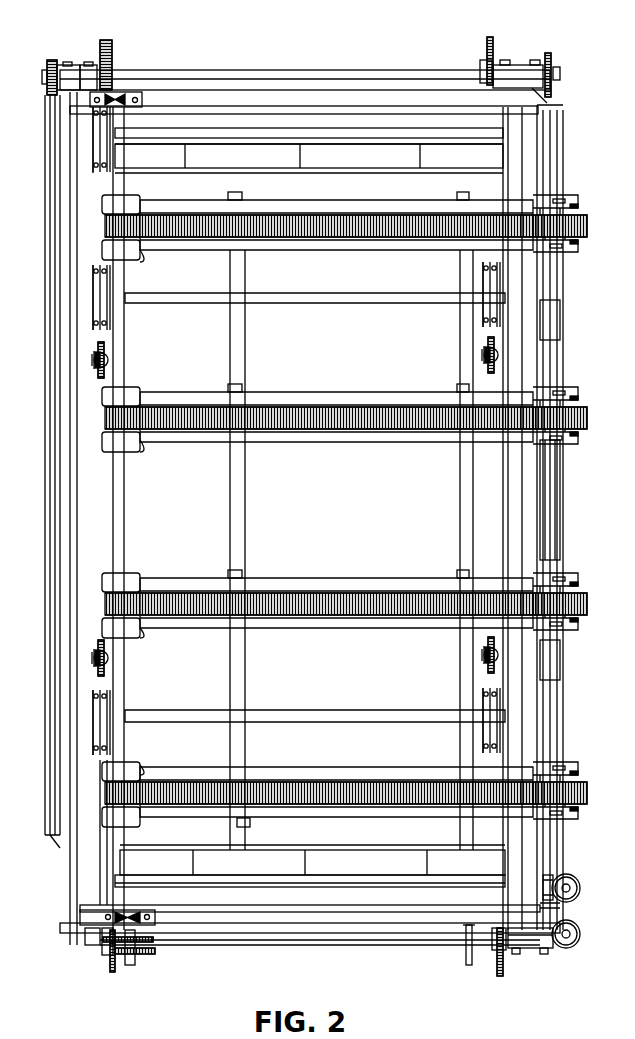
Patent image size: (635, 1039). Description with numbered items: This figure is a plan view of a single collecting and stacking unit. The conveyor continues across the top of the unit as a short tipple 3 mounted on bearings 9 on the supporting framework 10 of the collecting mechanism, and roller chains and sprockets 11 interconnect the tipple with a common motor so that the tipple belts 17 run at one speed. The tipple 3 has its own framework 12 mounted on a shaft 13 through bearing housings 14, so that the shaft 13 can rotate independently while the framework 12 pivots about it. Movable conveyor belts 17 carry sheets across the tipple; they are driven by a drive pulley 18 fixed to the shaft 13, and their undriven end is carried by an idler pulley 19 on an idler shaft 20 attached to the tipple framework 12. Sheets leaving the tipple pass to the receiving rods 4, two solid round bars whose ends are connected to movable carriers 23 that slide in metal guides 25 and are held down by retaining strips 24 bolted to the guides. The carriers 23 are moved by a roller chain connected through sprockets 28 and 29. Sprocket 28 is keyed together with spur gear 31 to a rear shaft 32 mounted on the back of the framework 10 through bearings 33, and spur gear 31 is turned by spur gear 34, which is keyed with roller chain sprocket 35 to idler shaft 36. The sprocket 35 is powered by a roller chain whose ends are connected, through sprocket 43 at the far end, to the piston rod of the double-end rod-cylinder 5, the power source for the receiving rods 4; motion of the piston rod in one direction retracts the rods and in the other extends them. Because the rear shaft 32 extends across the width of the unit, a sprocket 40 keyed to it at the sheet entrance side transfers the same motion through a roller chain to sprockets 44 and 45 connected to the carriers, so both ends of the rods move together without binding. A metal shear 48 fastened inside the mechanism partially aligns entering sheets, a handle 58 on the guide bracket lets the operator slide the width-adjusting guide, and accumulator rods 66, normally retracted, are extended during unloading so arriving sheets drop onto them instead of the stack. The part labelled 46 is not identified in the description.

The tipple 3 is at (333, 573).
The receiving rods 4 is at (355, 130).
The double-end rod-cylinder 5 is at (565, 515).
The bearings 9 is at (120, 107).
The framework 10 is at (265, 100).
The roller chains and sprockets 11 is at (150, 955).
The framework 12 is at (248, 207).
The shaft 13 is at (128, 515).
The bearing housings 14 is at (130, 197).
The conveyor belts 17 is at (405, 220).
The drive pulley 18 is at (140, 255).
The idler pulley 19 is at (575, 237).
The idler shaft 20 is at (575, 207).
The carriers 23 is at (125, 157).
The retaining strips 24 is at (100, 283).
The guides 25 is at (105, 312).
The sprocket 28 is at (493, 40).
The sprocket 29 is at (497, 350).
The spur gear 31 is at (580, 922).
The rear shaft 32 is at (320, 950).
The bearings 33 is at (548, 950).
The spur gear 34 is at (580, 882).
The roller chain sprocket 35 is at (555, 908).
The idler shaft 36 is at (548, 881).
The sprocket 40 is at (100, 60).
The sprocket 43 is at (550, 58).
The sprocket 44 is at (100, 65).
The sprocket 45 is at (98, 367).
The top rail 46 is at (200, 72).
The metal shear 48 is at (330, 170).
The handle 58 is at (465, 965).
The accumulator rods 66 is at (345, 293).